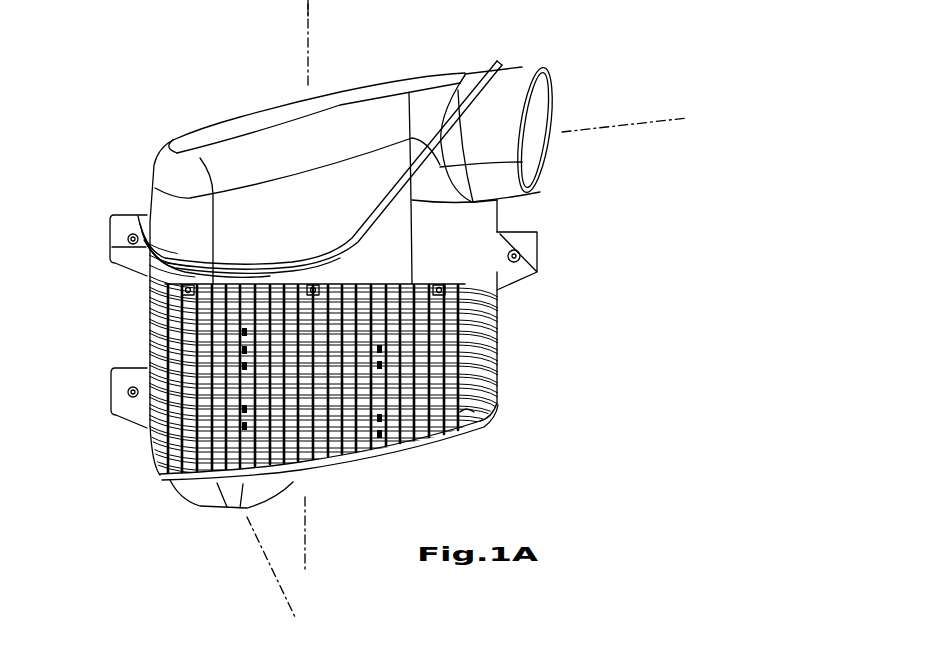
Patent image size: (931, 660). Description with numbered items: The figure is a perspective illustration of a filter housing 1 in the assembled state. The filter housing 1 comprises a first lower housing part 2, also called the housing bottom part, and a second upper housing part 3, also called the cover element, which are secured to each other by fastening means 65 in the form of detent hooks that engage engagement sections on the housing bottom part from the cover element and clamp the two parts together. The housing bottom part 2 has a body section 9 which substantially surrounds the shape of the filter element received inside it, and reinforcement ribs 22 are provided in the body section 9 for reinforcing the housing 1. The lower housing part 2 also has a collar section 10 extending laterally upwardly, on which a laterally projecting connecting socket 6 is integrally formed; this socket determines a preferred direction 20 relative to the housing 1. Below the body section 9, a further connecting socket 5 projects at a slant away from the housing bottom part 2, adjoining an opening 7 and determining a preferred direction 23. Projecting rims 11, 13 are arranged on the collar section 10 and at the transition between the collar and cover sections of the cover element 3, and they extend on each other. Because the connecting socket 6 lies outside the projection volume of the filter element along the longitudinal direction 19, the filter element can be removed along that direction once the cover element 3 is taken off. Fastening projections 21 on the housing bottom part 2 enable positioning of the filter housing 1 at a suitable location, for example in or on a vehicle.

The filter housing 1 is at (103, 65).
The first lower housing part 2 is at (150, 352).
The second upper housing part 3 is at (243, 115).
The connecting socket 5 is at (208, 492).
The connecting socket 6 is at (512, 138).
The opening 7 is at (308, 486).
The body section 9 is at (490, 360).
The collar section 10 is at (485, 212).
The projecting rim 11 is at (114, 247).
The projecting rim 13 is at (137, 238).
The longitudinal direction 19 is at (311, 10).
The preferred direction 20 is at (627, 125).
The fastening projections 21 is at (112, 263).
The reinforcement ribs 22 is at (470, 413).
The preferred direction 23 is at (262, 557).
The fastening means 65 is at (195, 276).